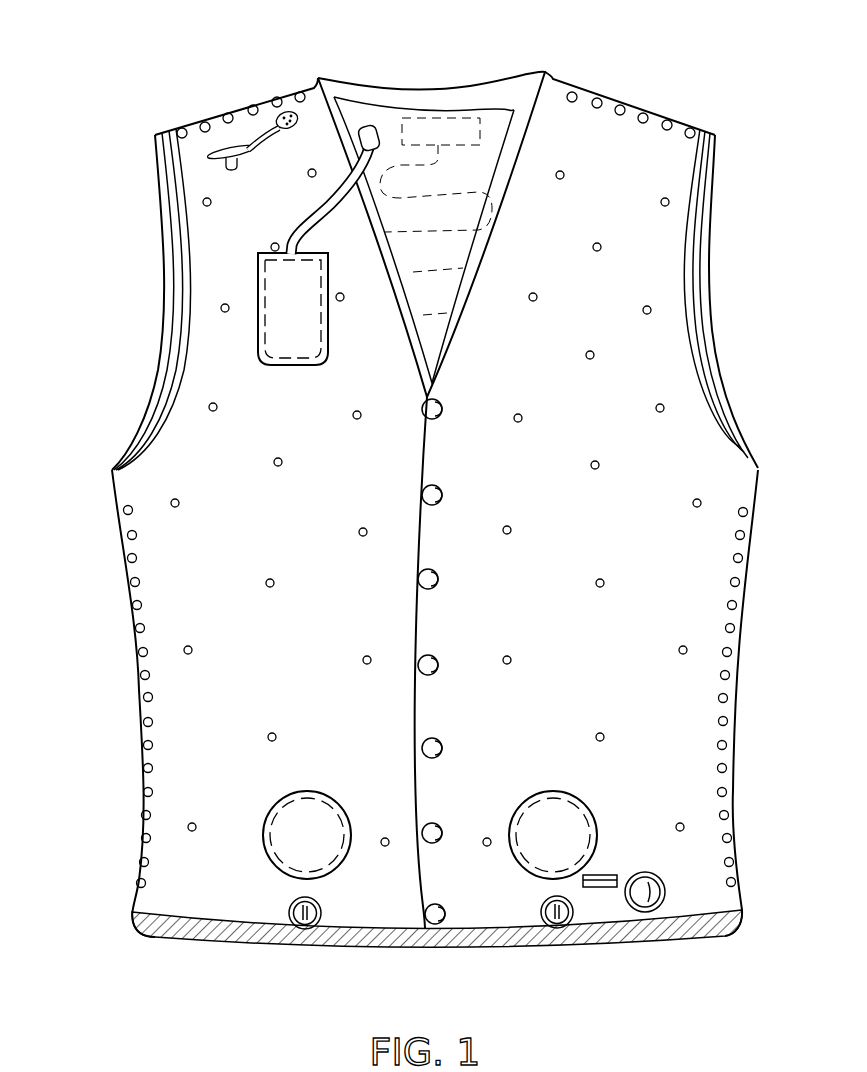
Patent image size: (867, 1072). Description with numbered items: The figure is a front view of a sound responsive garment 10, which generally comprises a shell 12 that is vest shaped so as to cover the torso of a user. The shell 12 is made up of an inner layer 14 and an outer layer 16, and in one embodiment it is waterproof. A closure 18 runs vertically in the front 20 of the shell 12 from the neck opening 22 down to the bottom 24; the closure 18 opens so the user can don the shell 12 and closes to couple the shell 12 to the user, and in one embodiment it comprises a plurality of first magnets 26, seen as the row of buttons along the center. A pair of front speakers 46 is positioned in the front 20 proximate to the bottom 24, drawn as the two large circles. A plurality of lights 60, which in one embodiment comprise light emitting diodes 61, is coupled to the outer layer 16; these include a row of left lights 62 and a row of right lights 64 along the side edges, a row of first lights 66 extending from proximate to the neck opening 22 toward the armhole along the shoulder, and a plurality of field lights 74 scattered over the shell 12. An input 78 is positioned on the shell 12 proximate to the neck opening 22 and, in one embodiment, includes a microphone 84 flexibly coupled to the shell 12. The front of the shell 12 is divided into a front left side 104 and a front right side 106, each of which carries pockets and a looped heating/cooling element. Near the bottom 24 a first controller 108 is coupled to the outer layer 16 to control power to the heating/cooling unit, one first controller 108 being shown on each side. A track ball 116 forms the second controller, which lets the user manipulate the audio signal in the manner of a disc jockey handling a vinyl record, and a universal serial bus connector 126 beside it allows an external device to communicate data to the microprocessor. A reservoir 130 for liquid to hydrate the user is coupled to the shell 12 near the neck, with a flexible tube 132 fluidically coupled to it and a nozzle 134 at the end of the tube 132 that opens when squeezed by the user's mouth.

The sound responsive garment 10 is at (738, 112).
The shell 12 is at (758, 502).
The inner layer 14 is at (507, 125).
The outer layer 16 is at (601, 133).
The closure 18 is at (430, 457).
The front 20 is at (678, 582).
The neck opening 22 is at (350, 122).
The bottom 24 is at (232, 928).
The first magnets 26 is at (418, 497).
The front speakers 46 is at (325, 855).
The lights 60 is at (312, 160).
The light emitting diodes 61 is at (135, 505).
The left lights 62 is at (733, 760).
The right lights 64 is at (129, 613).
The first lights 66 is at (650, 108).
The field lights 74 is at (510, 656).
The input 78 is at (228, 146).
The microphone 84 is at (268, 116).
The front left side 104 is at (640, 805).
The front right side 106 is at (218, 748).
The first controller 108 is at (302, 923).
The track ball 116 is at (648, 908).
The universal serial bus connector 126 is at (607, 890).
The reservoir 130 is at (286, 298).
The tube 132 is at (306, 206).
The nozzle 134 is at (379, 125).